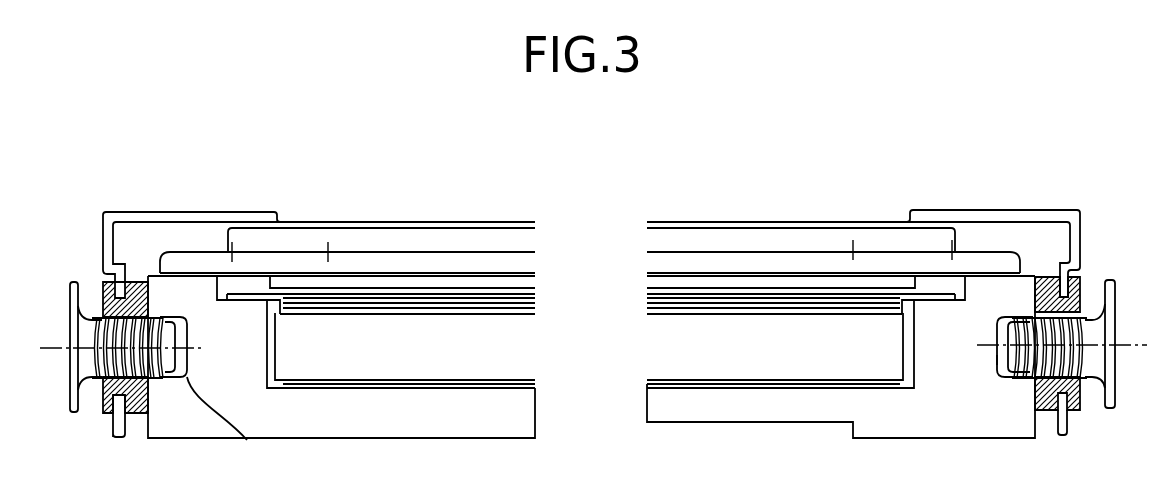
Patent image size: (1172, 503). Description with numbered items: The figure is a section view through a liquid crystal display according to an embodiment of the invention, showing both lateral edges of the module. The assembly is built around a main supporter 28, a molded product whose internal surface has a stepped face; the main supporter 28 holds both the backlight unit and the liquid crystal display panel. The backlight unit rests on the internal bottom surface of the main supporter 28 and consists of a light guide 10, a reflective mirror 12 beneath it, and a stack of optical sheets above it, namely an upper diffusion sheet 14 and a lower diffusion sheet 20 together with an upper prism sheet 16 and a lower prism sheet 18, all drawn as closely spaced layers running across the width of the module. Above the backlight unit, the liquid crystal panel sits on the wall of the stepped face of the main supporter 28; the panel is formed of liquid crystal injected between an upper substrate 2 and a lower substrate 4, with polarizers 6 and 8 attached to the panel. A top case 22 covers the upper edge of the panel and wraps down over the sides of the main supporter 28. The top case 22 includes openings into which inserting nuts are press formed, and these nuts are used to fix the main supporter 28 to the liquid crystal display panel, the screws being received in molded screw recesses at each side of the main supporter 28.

The upper substrate 2 is at (243, 232).
The lower substrate 4 is at (305, 265).
The polarizer 6 is at (353, 226).
The polarizer 8 is at (747, 280).
The light guide 10 is at (337, 355).
The reflective mirror 12 is at (427, 382).
The upper diffusion sheet 14 is at (360, 298).
The upper prism sheet 16 is at (387, 302).
The lower prism sheet 18 is at (413, 307).
The lower diffusion sheet 20 is at (440, 313).
The top case 22 is at (170, 216).
The main supporter 28 is at (168, 413).